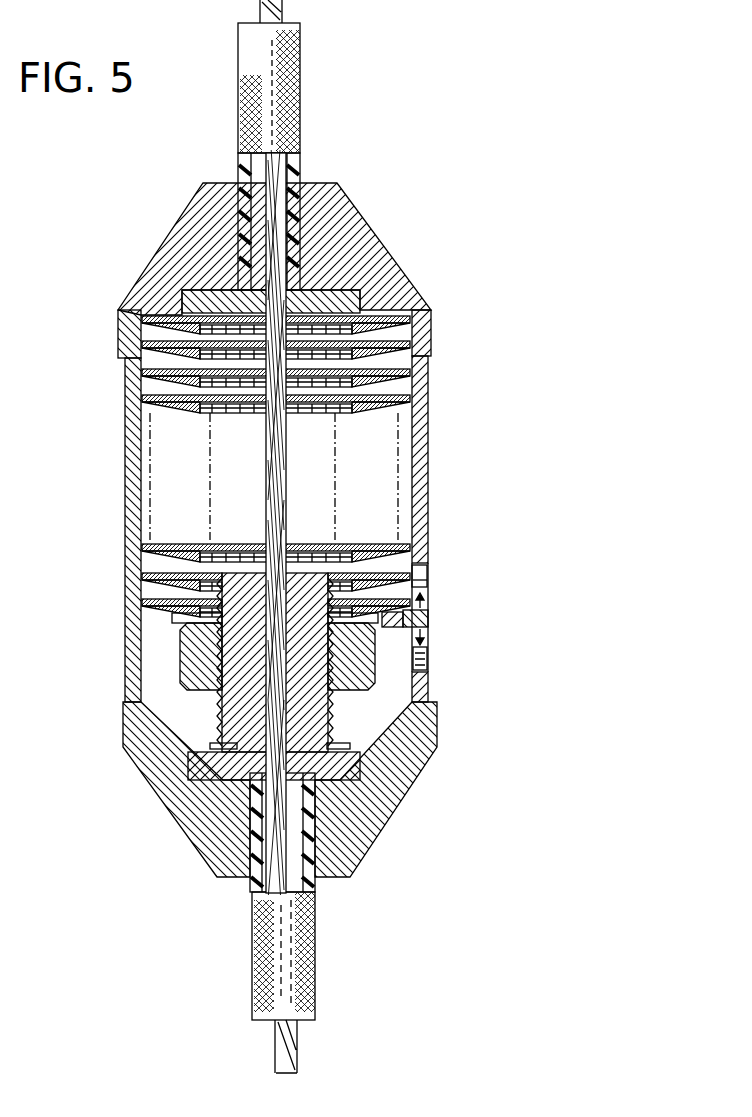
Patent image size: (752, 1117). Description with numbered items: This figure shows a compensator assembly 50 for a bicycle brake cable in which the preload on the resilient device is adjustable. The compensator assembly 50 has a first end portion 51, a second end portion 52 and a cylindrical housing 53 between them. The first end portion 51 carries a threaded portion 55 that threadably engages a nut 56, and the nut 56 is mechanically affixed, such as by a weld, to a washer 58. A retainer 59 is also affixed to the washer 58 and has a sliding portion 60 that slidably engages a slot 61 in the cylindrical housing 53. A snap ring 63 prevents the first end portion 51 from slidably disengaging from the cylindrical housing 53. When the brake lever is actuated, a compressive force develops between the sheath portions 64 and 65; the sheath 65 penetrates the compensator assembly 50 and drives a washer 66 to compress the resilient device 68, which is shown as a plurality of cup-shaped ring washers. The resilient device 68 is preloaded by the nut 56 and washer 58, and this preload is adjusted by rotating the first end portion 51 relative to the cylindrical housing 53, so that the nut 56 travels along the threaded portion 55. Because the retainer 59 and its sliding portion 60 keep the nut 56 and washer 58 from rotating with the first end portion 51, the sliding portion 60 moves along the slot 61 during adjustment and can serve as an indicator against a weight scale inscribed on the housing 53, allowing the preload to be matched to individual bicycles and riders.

The compensator assembly 50 is at (452, 388).
The first end portion 51 is at (397, 790).
The second end portion 52 is at (356, 237).
The cylindrical housing 53 is at (430, 467).
The threaded portion 55 is at (222, 703).
The nut 56 is at (183, 640).
The washer 58 is at (175, 616).
The retainer 59 is at (393, 628).
The sliding portion 60 is at (427, 615).
The slot 61 is at (420, 583).
The snap ring 63 is at (340, 745).
The sheath portion 64 is at (310, 947).
The sheath portion 65 is at (300, 107).
The washer 66 is at (195, 300).
The resilient device 68 is at (178, 417).